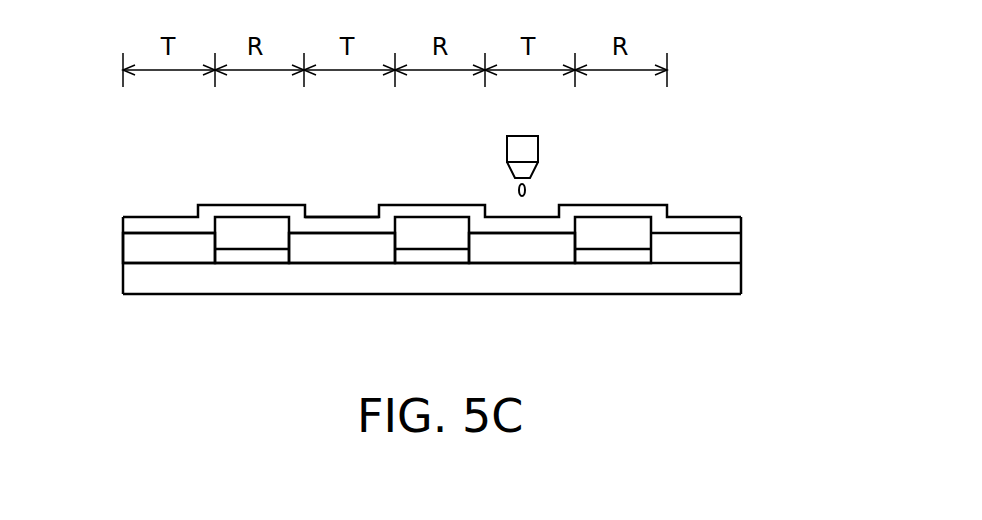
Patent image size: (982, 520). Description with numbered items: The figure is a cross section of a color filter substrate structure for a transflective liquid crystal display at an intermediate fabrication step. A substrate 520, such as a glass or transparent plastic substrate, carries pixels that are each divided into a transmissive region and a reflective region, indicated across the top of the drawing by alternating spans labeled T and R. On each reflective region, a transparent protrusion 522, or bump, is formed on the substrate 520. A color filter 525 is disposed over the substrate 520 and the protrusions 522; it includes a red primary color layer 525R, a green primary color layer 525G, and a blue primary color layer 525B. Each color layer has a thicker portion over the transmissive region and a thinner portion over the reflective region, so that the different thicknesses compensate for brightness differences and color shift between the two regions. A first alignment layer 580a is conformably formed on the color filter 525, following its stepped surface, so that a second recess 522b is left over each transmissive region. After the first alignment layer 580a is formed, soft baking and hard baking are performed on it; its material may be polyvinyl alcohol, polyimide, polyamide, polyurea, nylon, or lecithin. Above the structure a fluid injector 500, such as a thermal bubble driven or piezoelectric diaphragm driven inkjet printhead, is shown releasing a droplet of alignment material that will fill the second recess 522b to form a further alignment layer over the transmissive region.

The fluid injector 500 is at (528, 148).
The substrate 520 is at (728, 283).
The transparent protrusion 522 is at (251, 254).
The second recess 522b is at (342, 205).
The color filter 525 is at (112, 251).
The red primary color layer 525R is at (160, 254).
The green primary color layer 525G is at (340, 254).
The blue primary color layer 525B is at (520, 254).
The first alignment layer 580a is at (728, 226).